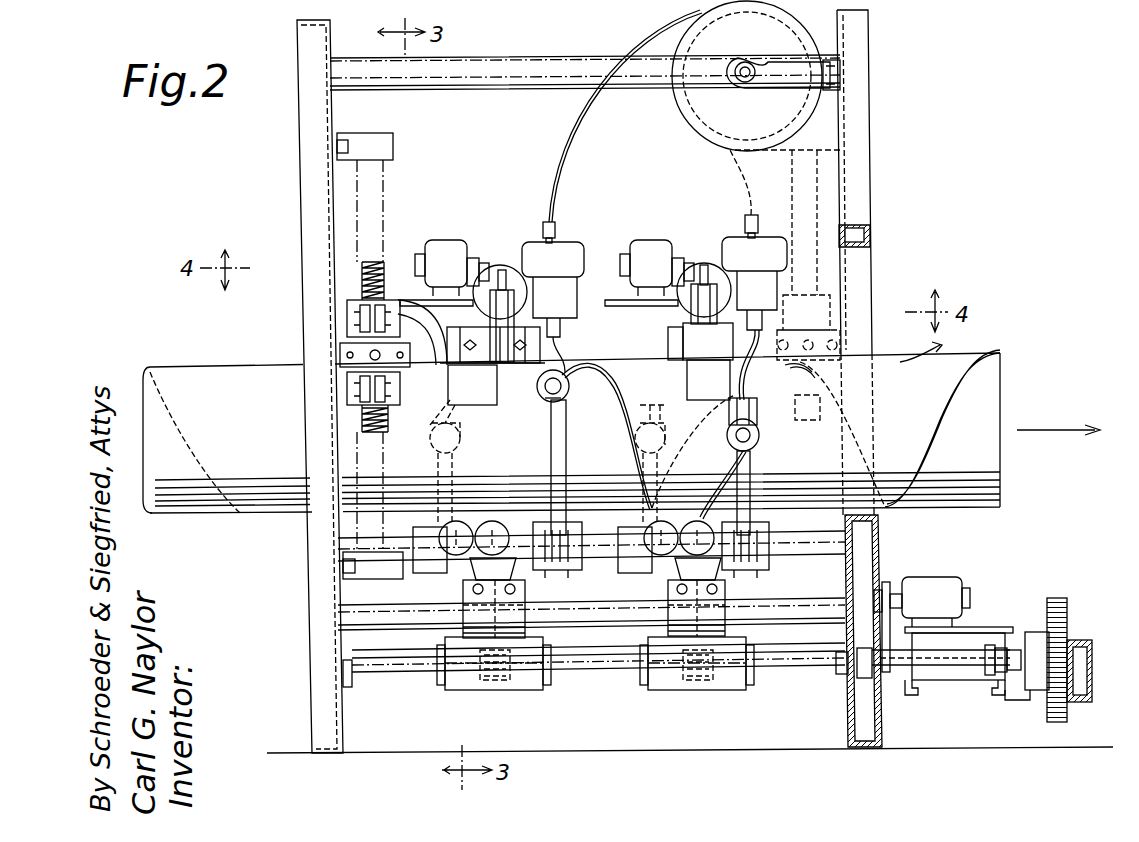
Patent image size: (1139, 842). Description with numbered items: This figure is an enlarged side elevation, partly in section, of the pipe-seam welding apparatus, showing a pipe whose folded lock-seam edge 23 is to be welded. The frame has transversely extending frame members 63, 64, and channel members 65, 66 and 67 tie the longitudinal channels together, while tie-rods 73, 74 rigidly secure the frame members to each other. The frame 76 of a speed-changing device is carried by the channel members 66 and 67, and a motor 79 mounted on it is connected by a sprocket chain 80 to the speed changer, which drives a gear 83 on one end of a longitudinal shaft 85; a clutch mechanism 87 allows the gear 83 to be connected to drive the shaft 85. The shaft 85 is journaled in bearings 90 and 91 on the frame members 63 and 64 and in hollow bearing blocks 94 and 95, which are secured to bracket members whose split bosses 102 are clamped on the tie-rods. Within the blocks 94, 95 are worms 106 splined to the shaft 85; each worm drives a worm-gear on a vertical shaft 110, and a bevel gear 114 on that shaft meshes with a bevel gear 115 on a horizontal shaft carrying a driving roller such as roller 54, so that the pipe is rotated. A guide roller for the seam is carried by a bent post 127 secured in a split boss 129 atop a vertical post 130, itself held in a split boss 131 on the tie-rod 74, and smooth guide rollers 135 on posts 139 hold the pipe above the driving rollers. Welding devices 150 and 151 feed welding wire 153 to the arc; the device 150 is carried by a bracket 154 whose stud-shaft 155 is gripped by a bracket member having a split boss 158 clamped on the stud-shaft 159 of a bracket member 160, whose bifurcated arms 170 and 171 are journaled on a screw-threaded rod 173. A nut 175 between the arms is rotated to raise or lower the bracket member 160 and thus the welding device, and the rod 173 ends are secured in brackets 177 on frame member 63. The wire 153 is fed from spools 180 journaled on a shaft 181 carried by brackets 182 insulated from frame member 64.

The folded edge 23 is at (565, 374).
The driving roller 54 is at (730, 452).
The frame member 63 is at (299, 153).
The frame member 64 is at (871, 172).
The channel member 65 is at (919, 691).
The channel member 66 is at (1003, 694).
The channel member 67 is at (1085, 645).
The tie-rod 73 is at (785, 600).
The tie-rod 74 is at (797, 537).
The frame of speed-changing device 76 is at (982, 627).
The motor 79 is at (935, 590).
The sprocket chain 80 is at (887, 620).
The gear 83 is at (1057, 598).
The shaft 85 is at (785, 666).
The clutch mechanism 87 is at (1018, 645).
The bearing 90 is at (355, 688).
The bearing 91 is at (836, 683).
The bearing block 94 is at (530, 684).
The bearing block 95 is at (673, 684).
The split boss 102 is at (594, 609).
The worm 106 is at (486, 694).
The shaft 110 is at (548, 640).
The bevel gear 114 is at (466, 572).
The bevel gear 115 is at (475, 520).
The bent post 127 is at (563, 387).
The split boss 129 is at (561, 400).
The post 130 is at (566, 437).
The split boss 131 is at (582, 527).
The guide roller 135 is at (460, 441).
The post 139 is at (412, 500).
The welding device 150 is at (537, 247).
The welding device 151 is at (709, 238).
The welding wire 153 is at (570, 143).
The bracket 154 is at (503, 262).
The stud-shaft 155 is at (538, 392).
The split boss 158 is at (494, 404).
The stud-shaft 159 is at (470, 328).
The bracket member 160 is at (412, 299).
The bifurcated arm 170 is at (347, 313).
The bifurcated arm 171 is at (347, 386).
The screw-threaded rod 173 is at (362, 418).
The nut 175 is at (340, 356).
The bracket 177 is at (393, 146).
The spool 180 is at (706, 125).
The shaft 181 is at (752, 67).
The bracket 182 is at (742, 60).